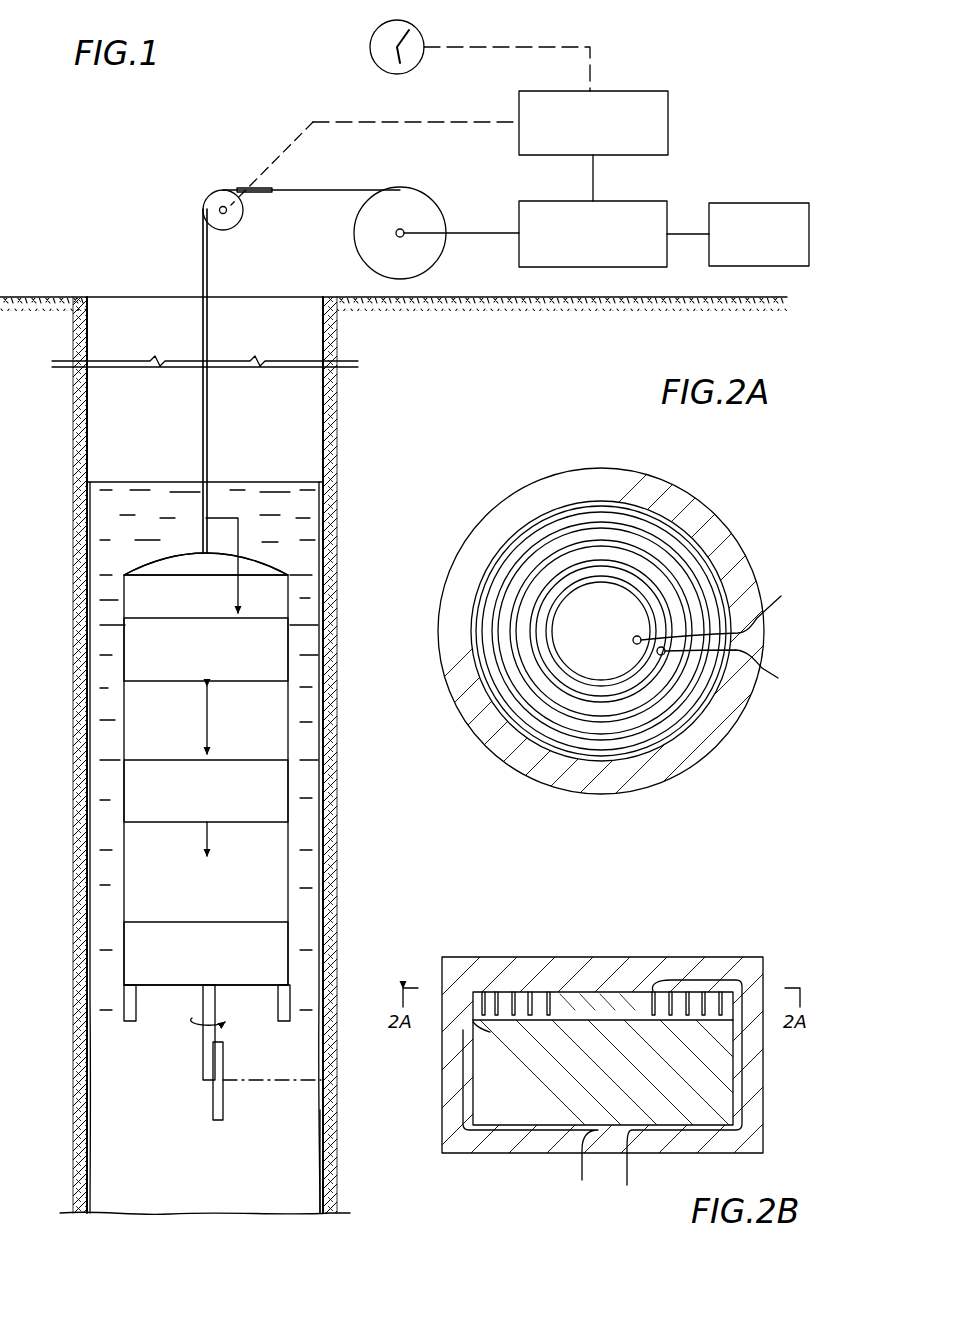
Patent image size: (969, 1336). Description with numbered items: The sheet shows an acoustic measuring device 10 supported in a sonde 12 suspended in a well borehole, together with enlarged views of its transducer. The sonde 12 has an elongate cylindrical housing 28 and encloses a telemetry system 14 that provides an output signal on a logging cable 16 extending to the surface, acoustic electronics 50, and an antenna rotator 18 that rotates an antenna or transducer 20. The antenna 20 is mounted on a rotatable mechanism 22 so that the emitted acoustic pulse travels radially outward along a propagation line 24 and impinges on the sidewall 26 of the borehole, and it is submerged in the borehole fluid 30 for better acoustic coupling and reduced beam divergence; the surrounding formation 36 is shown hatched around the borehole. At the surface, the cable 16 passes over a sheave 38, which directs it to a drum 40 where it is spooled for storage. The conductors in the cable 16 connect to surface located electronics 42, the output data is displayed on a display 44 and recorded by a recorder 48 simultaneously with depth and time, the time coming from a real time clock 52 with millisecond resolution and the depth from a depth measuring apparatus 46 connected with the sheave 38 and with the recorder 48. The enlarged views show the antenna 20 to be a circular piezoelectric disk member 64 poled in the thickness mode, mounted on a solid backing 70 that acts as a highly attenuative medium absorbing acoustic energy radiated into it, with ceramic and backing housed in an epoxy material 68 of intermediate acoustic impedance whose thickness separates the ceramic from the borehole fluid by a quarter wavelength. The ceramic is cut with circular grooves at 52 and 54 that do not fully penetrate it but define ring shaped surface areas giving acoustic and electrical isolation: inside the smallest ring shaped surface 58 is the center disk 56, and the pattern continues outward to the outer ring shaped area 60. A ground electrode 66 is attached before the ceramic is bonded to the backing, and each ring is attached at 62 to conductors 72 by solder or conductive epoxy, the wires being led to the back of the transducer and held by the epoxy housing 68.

In FIG. 1, the acoustic measuring device 10 is at (300, 606).
In FIG. 1, the sonde 12 is at (262, 568).
In FIG. 1, the telemetry system 14 is at (154, 616).
In FIG. 1, the logging cable 16 is at (209, 258).
In FIG. 1, the antenna rotator 18 is at (148, 922).
In FIG. 1, the antenna 20 is at (224, 1101).
In FIG. 2A, the antenna 20 is at (671, 777).
In FIG. 2B, the antenna 20 is at (442, 1072).
In FIG. 1, the rotatable mechanism 22 is at (218, 1002).
In FIG. 1, the propagation line 24 is at (285, 1082).
In FIG. 1, the sidewall 26 is at (326, 1155).
In FIG. 1, the housing 28 is at (293, 1001).
In FIG. 1, the borehole fluid 30 is at (163, 1175).
In FIG. 1, the formation 36 is at (90, 657).
In FIG. 1, the sheave 38 is at (213, 193).
In FIG. 1, the drum 40 is at (355, 234).
In FIG. 1, the surface located electronics 42 is at (640, 201).
In FIG. 1, the display 44 is at (762, 203).
In FIG. 1, the depth measuring apparatus 46 is at (313, 121).
In FIG. 1, the recorder 48 is at (668, 127).
In FIG. 1, the acoustic electronics 50 is at (150, 754).
In FIG. 1, the real time clock 52 is at (374, 36).
In FIG. 2A, the real time clock 52 is at (588, 585).
In FIG. 2A, the circular groove 54 is at (624, 558).
In FIG. 2A, the center disk 56 is at (636, 623).
In FIG. 2B, the center disk 56 is at (610, 988).
In FIG. 2A, the smallest ring shaped surface 58 is at (651, 593).
In FIG. 2B, the smallest ring shaped surface 58 is at (545, 990).
In FIG. 2A, the outer ring shaped area 60 is at (610, 503).
In FIG. 2B, the outer ring shaped area 60 is at (477, 957).
In FIG. 2A, the electrical attachment 62 is at (657, 654).
In FIG. 2B, the electrical attachment 62 is at (660, 988).
In FIG. 2A, the piezoelectric disk member 64 is at (700, 733).
In FIG. 2B, the piezoelectric disk member 64 is at (599, 1015).
In FIG. 2A, the ground electrode 66 is at (472, 630).
In FIG. 2B, the ground electrode 66 is at (478, 1024).
In FIG. 2B, the epoxy material 68 is at (577, 968).
In FIG. 2B, the solid backing 70 is at (642, 1075).
In FIG. 2A, the conductors 72 is at (723, 634).
In FIG. 2B, the conductors 72 is at (736, 1073).